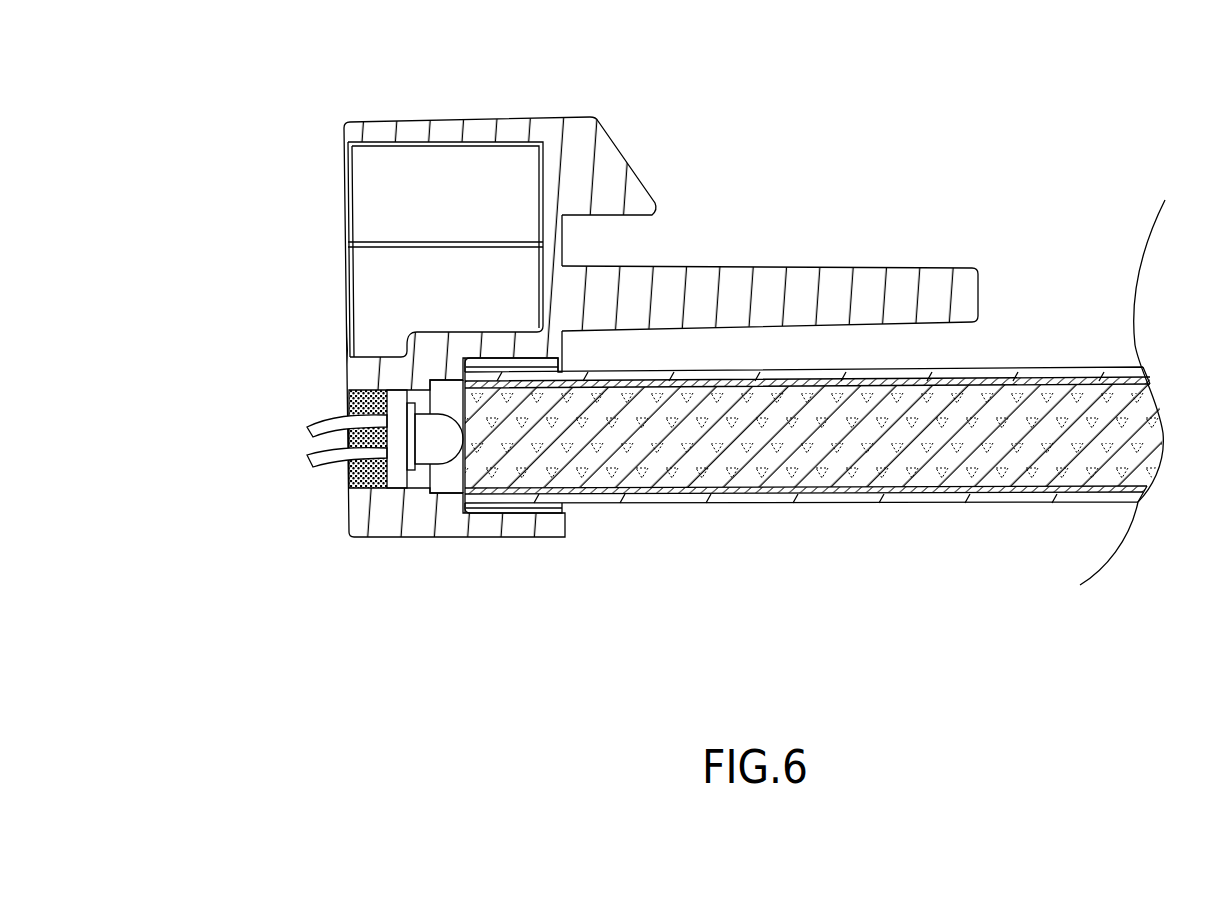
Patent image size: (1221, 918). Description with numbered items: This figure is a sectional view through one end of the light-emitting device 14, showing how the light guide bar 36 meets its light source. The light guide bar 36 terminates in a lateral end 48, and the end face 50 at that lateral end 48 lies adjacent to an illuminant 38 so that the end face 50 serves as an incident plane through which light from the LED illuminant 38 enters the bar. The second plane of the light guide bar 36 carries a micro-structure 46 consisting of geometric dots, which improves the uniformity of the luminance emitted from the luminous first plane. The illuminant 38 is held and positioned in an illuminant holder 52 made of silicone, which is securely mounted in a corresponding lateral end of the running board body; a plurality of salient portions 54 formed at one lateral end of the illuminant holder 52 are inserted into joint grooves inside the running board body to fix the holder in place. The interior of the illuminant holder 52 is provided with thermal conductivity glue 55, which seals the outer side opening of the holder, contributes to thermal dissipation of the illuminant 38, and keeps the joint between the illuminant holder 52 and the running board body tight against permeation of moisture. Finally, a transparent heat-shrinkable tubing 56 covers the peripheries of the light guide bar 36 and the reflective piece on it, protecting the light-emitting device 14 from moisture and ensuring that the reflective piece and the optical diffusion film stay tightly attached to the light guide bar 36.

The light-emitting device 14 is at (341, 583).
The light guide bar 36 is at (810, 468).
The illuminant 38 is at (427, 447).
The micro-structure 46 is at (937, 495).
The lateral end 48 is at (495, 488).
The end face 50 is at (452, 480).
The illuminant holder 52 is at (572, 143).
The salient portion 54 is at (840, 282).
The thermal conductivity glue 55 is at (360, 473).
The heat-shrinkable tubing 56 is at (1062, 365).